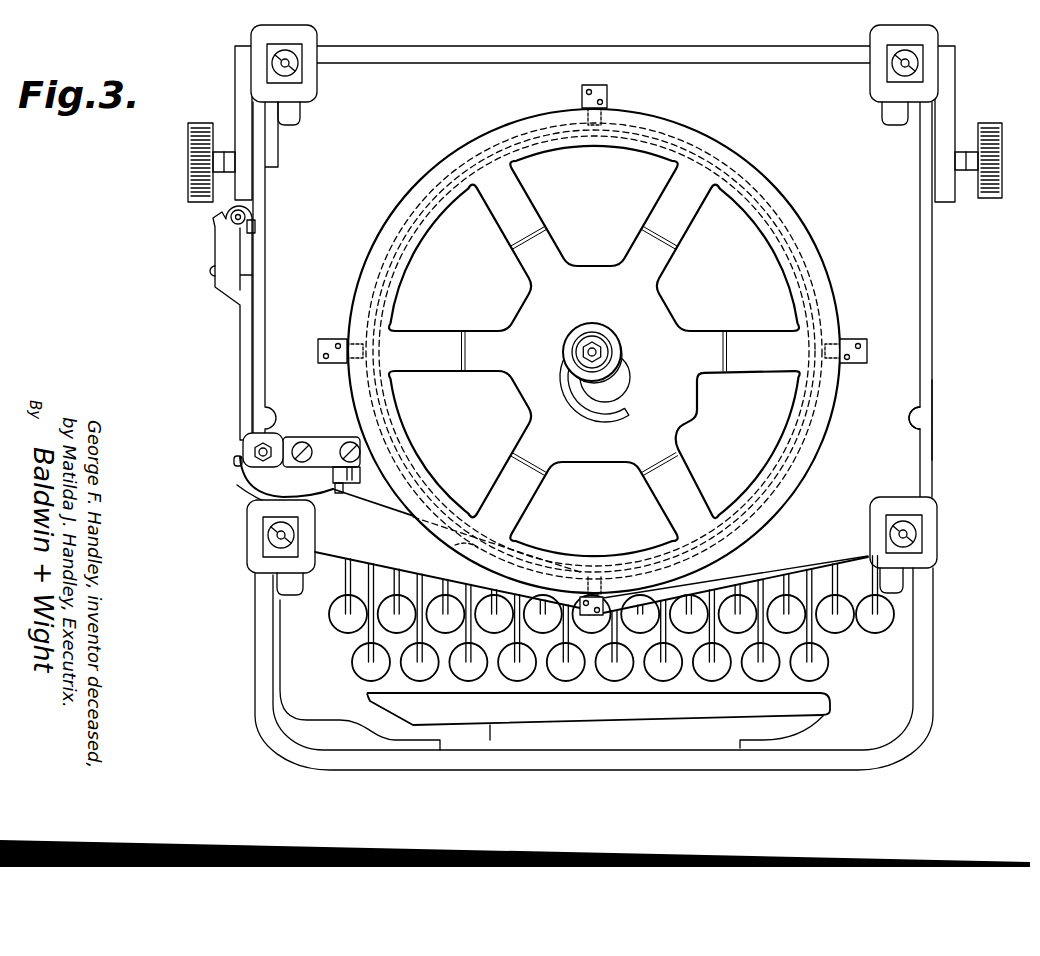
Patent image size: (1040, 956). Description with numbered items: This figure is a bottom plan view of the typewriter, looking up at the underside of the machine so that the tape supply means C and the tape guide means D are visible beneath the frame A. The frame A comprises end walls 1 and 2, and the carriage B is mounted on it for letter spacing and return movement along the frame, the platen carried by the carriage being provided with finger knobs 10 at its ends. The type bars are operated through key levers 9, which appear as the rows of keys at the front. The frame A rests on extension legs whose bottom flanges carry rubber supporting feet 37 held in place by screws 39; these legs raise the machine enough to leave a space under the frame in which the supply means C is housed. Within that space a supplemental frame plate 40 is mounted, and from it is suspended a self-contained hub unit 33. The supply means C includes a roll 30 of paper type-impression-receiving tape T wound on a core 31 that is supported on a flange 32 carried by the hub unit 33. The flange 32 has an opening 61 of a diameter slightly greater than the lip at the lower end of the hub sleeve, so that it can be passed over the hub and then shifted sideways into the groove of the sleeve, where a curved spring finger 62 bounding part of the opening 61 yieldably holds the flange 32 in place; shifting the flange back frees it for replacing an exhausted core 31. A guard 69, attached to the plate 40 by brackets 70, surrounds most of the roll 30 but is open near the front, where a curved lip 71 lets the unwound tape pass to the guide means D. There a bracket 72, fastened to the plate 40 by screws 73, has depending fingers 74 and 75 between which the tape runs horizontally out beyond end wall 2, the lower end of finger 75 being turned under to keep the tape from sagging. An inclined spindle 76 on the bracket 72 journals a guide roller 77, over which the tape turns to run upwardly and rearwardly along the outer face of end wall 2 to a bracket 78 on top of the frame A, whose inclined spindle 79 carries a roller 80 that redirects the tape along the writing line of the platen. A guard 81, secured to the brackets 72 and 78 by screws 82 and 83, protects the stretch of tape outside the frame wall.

The end wall 1 is at (924, 421).
The end wall 2 is at (255, 606).
The key levers 9 is at (345, 642).
The finger knobs 10 is at (188, 158).
The roll 30 is at (793, 450).
The core 31 is at (247, 540).
The flange 32 is at (672, 422).
The hub unit 33 is at (613, 334).
The rubber supporting feet 37 is at (258, 80).
The screws 39 is at (272, 63).
The supplemental frame plate 40 is at (900, 398).
The opening 61 is at (629, 370).
The curved spring finger 62 is at (576, 400).
The guard 69 is at (532, 136).
The brackets 70 is at (581, 95).
The curved lip 71 is at (462, 548).
The bracket 72 is at (343, 437).
The screws 73 is at (325, 446).
The depending finger 74 is at (355, 500).
The depending finger 75 is at (339, 494).
The inclined spindle 76 is at (256, 450).
The guide roller 77 is at (265, 490).
The bracket 78 is at (246, 256).
The inclined spindle 79 is at (247, 215).
The roller 80 is at (255, 226).
The guard 81 is at (240, 362).
The screw 82 is at (233, 461).
The screw 83 is at (211, 271).
The frame A is at (942, 351).
The carriage B is at (964, 117).
The tape supply means C is at (840, 270).
The guide means D is at (236, 315).
The tape T is at (253, 488).